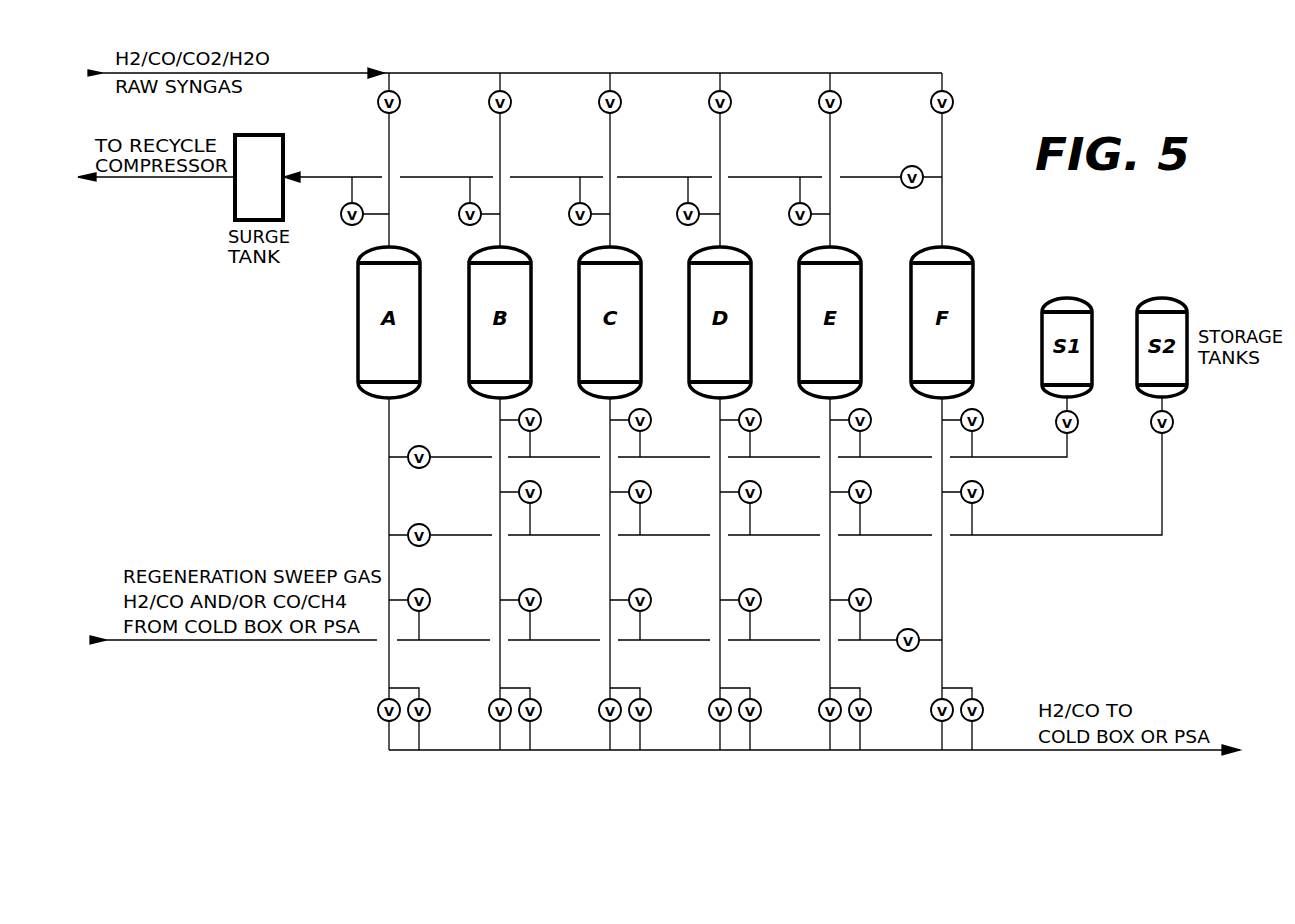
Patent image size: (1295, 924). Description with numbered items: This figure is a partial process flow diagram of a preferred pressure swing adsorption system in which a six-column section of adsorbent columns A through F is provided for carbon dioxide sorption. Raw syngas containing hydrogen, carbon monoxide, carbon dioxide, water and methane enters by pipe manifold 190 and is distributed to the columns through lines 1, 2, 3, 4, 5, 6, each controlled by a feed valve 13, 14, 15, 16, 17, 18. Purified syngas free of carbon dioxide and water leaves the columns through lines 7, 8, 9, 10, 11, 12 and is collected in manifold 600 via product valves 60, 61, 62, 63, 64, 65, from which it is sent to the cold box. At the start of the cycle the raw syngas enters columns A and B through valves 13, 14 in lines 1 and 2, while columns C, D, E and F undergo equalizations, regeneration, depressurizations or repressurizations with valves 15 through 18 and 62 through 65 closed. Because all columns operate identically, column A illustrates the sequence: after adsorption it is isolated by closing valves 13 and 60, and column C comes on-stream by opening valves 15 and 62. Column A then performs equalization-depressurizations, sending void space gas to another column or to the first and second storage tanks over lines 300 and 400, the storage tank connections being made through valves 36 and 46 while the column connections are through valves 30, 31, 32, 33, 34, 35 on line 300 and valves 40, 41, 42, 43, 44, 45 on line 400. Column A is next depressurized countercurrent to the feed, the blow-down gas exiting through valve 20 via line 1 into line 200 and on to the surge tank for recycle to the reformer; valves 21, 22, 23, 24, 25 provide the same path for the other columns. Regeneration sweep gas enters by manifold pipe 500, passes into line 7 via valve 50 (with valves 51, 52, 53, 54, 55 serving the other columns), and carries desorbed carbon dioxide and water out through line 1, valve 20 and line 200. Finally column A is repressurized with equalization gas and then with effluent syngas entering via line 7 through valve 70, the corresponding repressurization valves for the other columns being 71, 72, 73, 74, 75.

The line 1 is at (392, 150).
The line 2 is at (503, 150).
The feed line to adsorber C 3 is at (613, 150).
The feed line to adsorber D 4 is at (723, 150).
The feed line to adsorber E 5 is at (833, 150).
The feed line to adsorber F 6 is at (945, 150).
The line 7 is at (392, 563).
The line 8 is at (503, 563).
The outlet line from adsorber C 9 is at (613, 563).
The outlet line from adsorber D 10 is at (723, 563).
The outlet line from adsorber E 11 is at (833, 563).
The outlet line from adsorber F 12 is at (945, 563).
The valve 13 is at (401, 104).
The valve 14 is at (512, 104).
The valve 15 is at (622, 104).
The valve 16 is at (732, 104).
The valve 17 is at (842, 104).
The valve 18 is at (954, 104).
The valve 20 is at (345, 224).
The recycle valve 21 is at (463, 224).
The recycle valve 22 is at (573, 224).
The recycle valve 23 is at (681, 224).
The recycle valve 24 is at (793, 224).
The recycle valve 25 is at (906, 188).
The storage line valve 30 is at (433, 439).
The storage line valve 31 is at (542, 420).
The storage line valve 32 is at (652, 420).
The storage line valve 33 is at (762, 420).
The storage line valve 34 is at (872, 420).
The storage line valve 35 is at (984, 420).
The storage tank S1 valve 36 is at (1079, 422).
The storage line valve 40 is at (439, 522).
The storage line valve 41 is at (540, 500).
The storage line valve 42 is at (650, 500).
The storage line valve 43 is at (760, 500).
The storage line valve 44 is at (870, 500).
The storage line valve 45 is at (982, 500).
The storage tank S2 valve 46 is at (1176, 432).
The valve 50 is at (431, 608).
The sweep gas valve 51 is at (542, 608).
The sweep gas valve 52 is at (652, 608).
The sweep gas valve 53 is at (762, 608).
The sweep gas valve 54 is at (872, 608).
The sweep gas valve 55 is at (905, 652).
The valve 60 is at (378, 717).
The valve 61 is at (492, 722).
The valve 62 is at (602, 722).
The valve 63 is at (712, 722).
The valve 64 is at (822, 722).
The valve 65 is at (934, 722).
The valve 70 is at (431, 717).
The product valve 71 is at (542, 717).
The product valve 72 is at (652, 717).
The product valve 73 is at (762, 717).
The product valve 74 is at (872, 717).
The product valve 75 is at (984, 717).
The pipe manifold 190 is at (591, 73).
The line 200 is at (340, 168).
The line 300 is at (1018, 458).
The line 400 is at (1166, 501).
The manifold pipe 500 is at (456, 642).
The manifold 600 is at (700, 753).